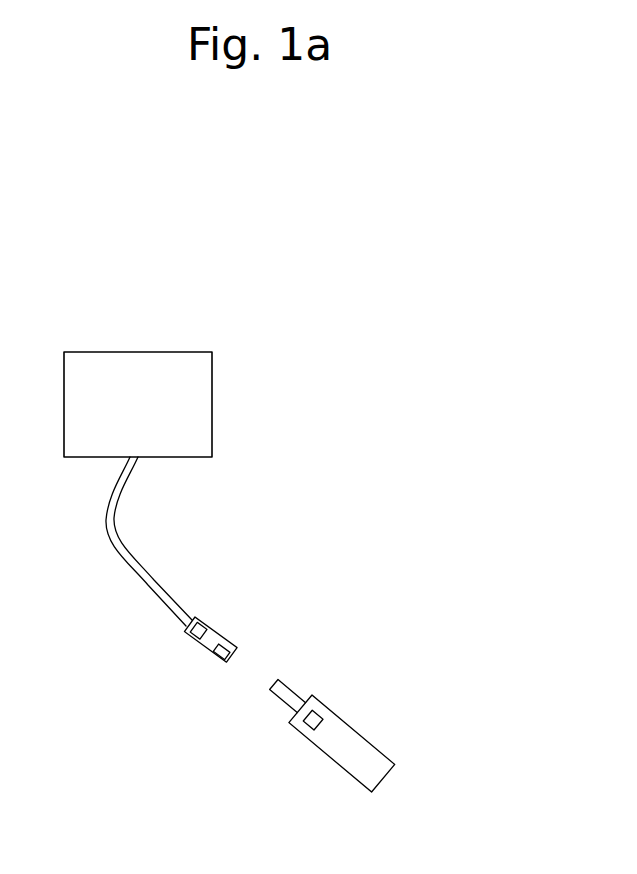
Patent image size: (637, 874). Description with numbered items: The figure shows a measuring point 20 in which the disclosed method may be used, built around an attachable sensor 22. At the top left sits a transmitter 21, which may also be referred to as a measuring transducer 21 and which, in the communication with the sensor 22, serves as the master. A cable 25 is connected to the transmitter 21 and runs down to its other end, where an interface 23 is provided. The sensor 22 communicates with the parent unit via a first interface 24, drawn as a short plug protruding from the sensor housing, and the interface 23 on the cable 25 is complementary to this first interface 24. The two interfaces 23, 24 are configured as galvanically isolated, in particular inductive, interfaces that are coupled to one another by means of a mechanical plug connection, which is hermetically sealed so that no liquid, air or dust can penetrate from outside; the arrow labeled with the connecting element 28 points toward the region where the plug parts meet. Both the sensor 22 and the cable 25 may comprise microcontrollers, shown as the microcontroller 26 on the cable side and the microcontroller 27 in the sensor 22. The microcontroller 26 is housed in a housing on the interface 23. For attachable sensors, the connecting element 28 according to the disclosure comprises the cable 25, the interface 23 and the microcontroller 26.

The measuring point 20 is at (381, 279).
The transmitter 21 is at (182, 403).
The attachable sensor 22 is at (368, 778).
The interface 23 is at (233, 645).
The first interface 24 is at (276, 693).
The cable 25 is at (133, 563).
The microcontroller 26 is at (188, 629).
The microcontroller 27 is at (316, 720).
The connecting element 28 is at (326, 556).